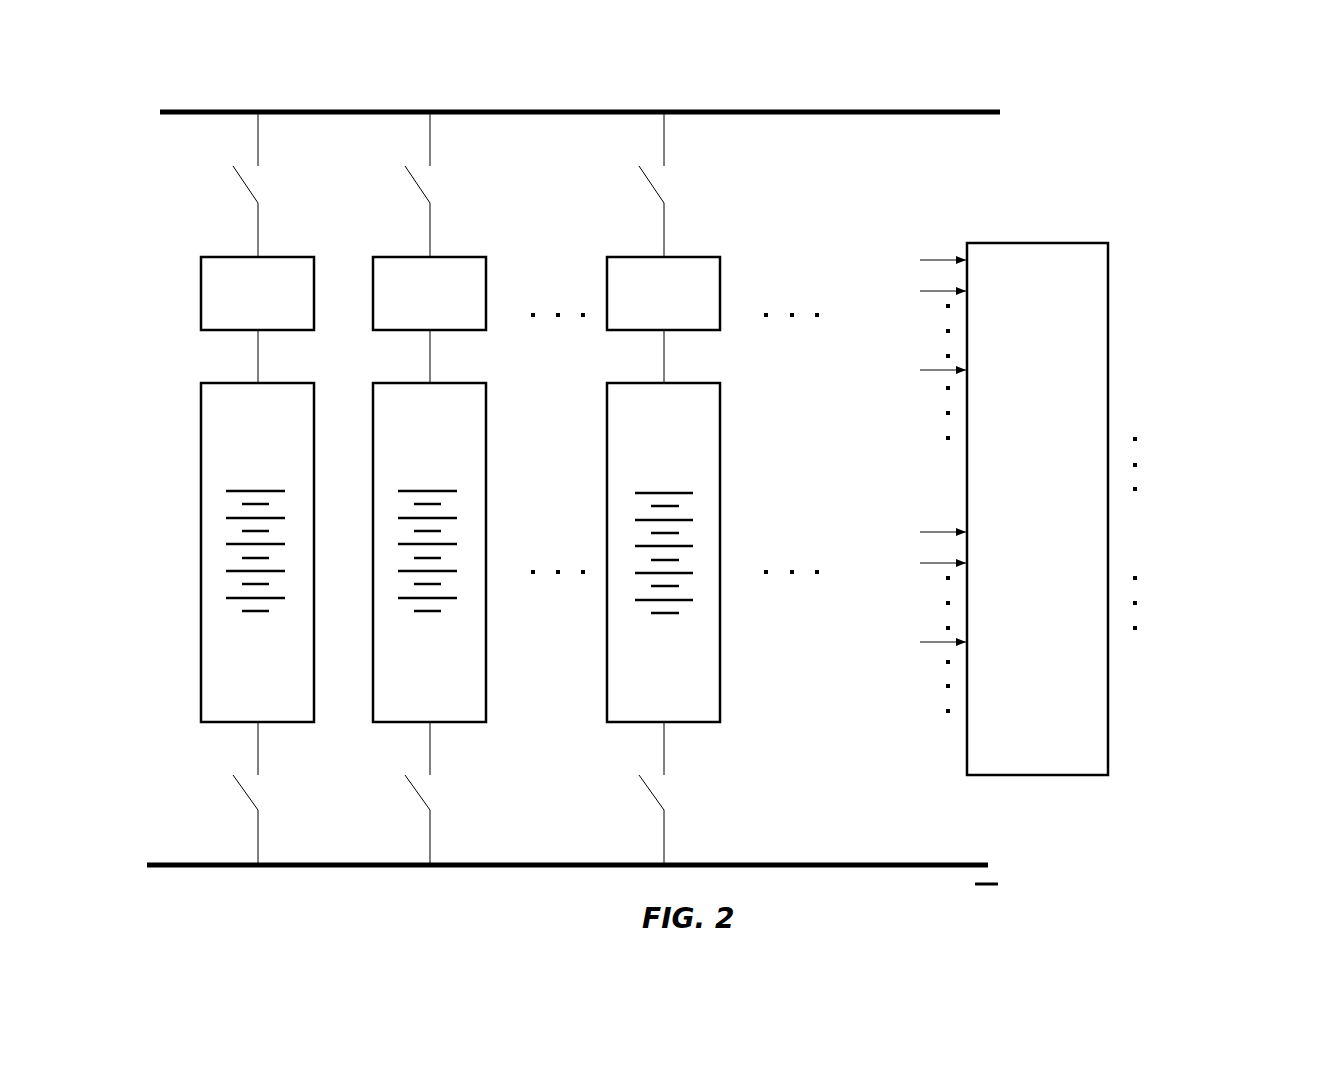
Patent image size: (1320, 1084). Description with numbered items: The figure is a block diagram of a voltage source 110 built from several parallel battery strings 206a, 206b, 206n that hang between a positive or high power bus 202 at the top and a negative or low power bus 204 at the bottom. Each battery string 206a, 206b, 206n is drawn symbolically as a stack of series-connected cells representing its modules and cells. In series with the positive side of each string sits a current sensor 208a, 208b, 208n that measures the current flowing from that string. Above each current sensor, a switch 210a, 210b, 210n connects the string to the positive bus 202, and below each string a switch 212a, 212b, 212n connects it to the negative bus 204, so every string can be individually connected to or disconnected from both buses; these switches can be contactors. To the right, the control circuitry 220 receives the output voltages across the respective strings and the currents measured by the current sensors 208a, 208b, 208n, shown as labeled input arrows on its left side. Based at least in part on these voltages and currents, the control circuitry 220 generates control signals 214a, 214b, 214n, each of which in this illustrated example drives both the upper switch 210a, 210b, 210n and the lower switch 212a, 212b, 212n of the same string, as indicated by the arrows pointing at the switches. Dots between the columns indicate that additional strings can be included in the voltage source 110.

The voltage source 110 is at (1216, 153).
The positive or high power bus 202 is at (196, 117).
The negative or low power bus 204 is at (215, 868).
The battery string 206a is at (315, 413).
The battery string 206b is at (487, 413).
The battery string 206n is at (721, 413).
The current sensor 208a is at (315, 288).
The current sensor 208b is at (487, 288).
The current sensor 208n is at (721, 288).
The switch 210a is at (226, 191).
The switch 210b is at (398, 191).
The switch 210n is at (632, 191).
The switch 212a is at (216, 790).
The switch 212b is at (398, 790).
The switch 212n is at (632, 790).
The control signal 214a is at (259, 185).
The control signal 214b is at (448, 183).
The control signal 214n is at (680, 183).
The control circuitry 220 is at (1108, 272).